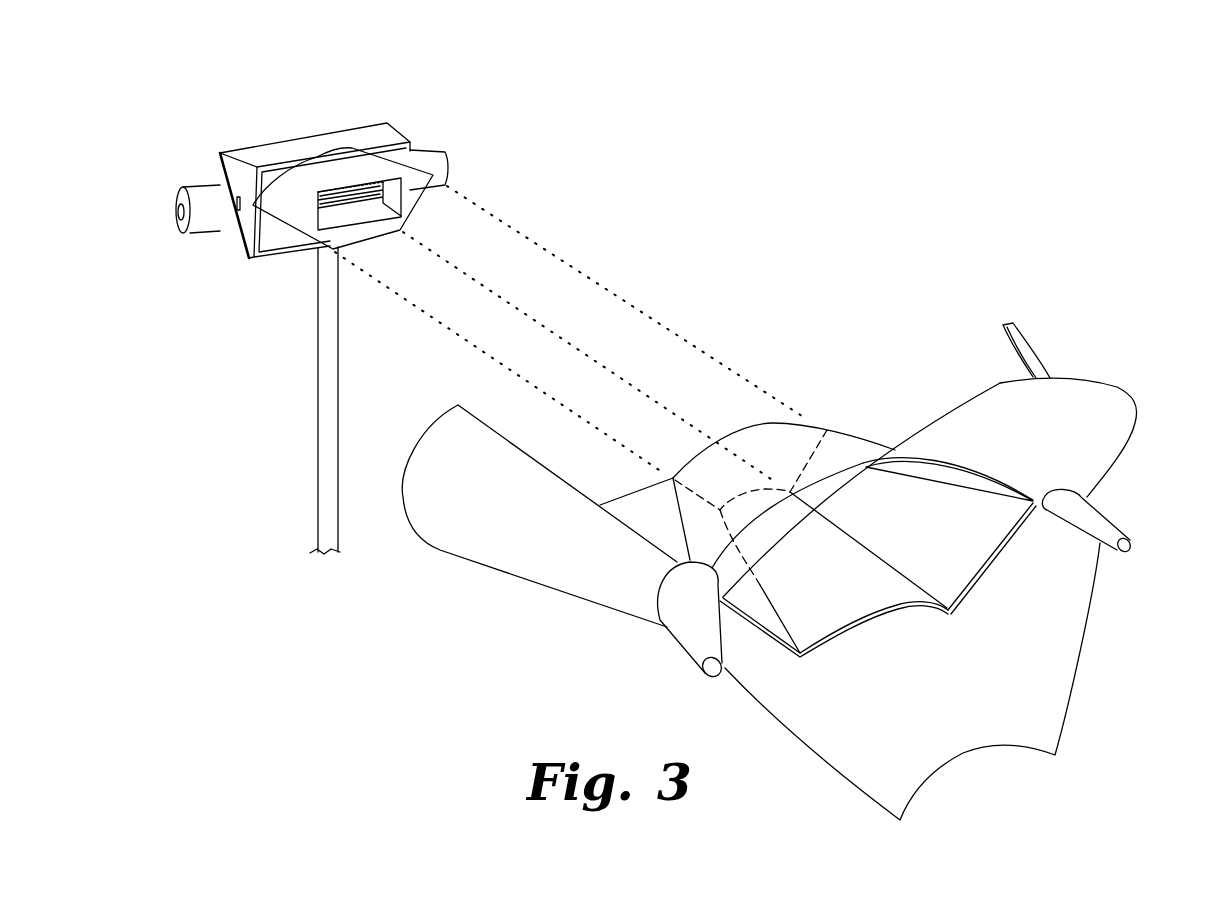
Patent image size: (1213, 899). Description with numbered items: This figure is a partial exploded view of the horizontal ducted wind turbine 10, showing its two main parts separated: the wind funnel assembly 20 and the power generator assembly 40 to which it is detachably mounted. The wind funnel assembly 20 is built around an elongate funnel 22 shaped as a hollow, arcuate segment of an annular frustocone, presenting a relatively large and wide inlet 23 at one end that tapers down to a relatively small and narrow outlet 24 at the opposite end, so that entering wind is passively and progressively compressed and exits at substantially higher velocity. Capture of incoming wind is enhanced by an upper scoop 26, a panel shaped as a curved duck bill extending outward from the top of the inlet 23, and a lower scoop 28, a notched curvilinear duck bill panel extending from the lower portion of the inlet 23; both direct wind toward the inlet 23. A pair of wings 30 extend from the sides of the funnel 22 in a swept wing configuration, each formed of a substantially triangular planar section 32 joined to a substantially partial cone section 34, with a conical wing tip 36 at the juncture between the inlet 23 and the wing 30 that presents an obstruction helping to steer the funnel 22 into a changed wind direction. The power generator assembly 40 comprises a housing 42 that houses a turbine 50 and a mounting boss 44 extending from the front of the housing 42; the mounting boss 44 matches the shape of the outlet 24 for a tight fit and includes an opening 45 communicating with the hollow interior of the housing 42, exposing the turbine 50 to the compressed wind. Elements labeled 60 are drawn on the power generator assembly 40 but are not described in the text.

The horizontal ducted wind turbine 10 is at (745, 168).
The wind funnel assembly 20 is at (932, 316).
The funnel 22 is at (847, 443).
The inlet opening 23 is at (976, 553).
The outlet opening 24 is at (733, 428).
The upper scoop 26 is at (1097, 403).
The lower scoop 28 is at (897, 778).
The wing 30 is at (437, 598).
The substantially triangular planar section 32 is at (647, 510).
The substantially partial cone section 34 is at (557, 562).
The conical wing tip 36 is at (693, 635).
The power generator assembly 40 is at (393, 92).
The housing 42 is at (277, 152).
The mounting boss 44 is at (303, 177).
The opening 45 is at (399, 204).
The turbine 50 is at (366, 205).
The adjustment knob 60 is at (202, 185).